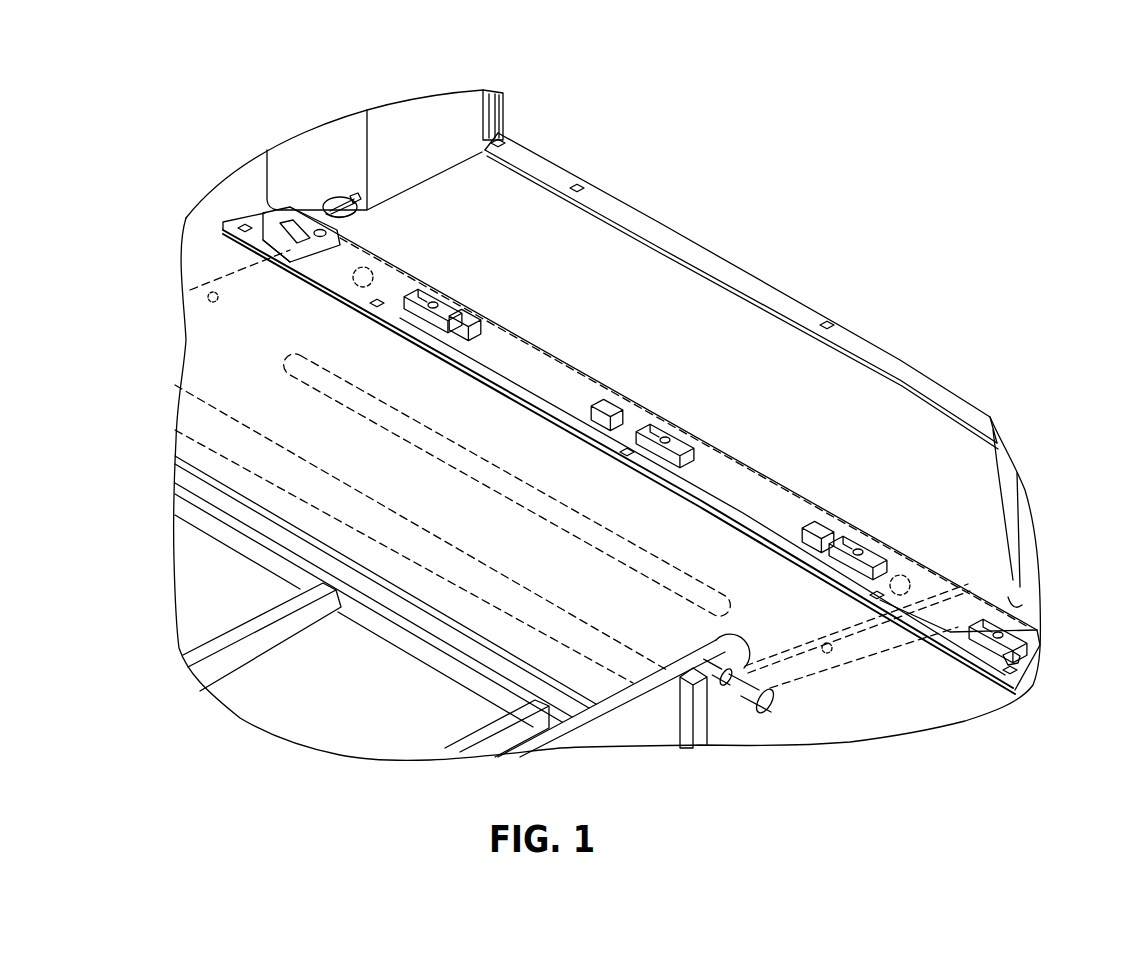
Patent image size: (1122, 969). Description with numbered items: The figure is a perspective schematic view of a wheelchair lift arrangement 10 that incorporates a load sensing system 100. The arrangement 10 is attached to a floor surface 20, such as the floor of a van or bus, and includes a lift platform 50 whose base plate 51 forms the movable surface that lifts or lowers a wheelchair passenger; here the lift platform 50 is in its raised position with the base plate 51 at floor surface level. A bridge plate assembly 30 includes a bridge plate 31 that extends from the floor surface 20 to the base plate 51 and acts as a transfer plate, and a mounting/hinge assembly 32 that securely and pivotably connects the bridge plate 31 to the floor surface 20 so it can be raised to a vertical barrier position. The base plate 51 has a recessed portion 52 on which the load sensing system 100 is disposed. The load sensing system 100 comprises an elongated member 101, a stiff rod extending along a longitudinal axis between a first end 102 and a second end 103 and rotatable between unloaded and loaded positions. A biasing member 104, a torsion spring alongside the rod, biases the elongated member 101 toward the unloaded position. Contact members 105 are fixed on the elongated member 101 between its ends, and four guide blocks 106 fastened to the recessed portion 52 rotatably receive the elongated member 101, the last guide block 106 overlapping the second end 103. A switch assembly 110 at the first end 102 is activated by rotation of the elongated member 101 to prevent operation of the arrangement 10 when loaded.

The wheelchair lift arrangement 10 is at (875, 137).
The floor surface 20 is at (328, 697).
The bridge plate assembly 30 is at (866, 662).
The bridge plate 31 is at (548, 577).
The mounting/hinge assembly 32 is at (718, 714).
The lift platform 50 is at (833, 265).
The base plate 51 is at (748, 422).
The recessed portion 52 is at (950, 633).
The load sensing system 100 is at (745, 513).
The elongated member 101 is at (395, 278).
The first end 102 is at (326, 200).
The second end 103 is at (1005, 648).
The biasing member 104 is at (500, 135).
The contact member 105 is at (465, 312).
The guide block 106 is at (430, 293).
The switch assembly 110 is at (272, 226).